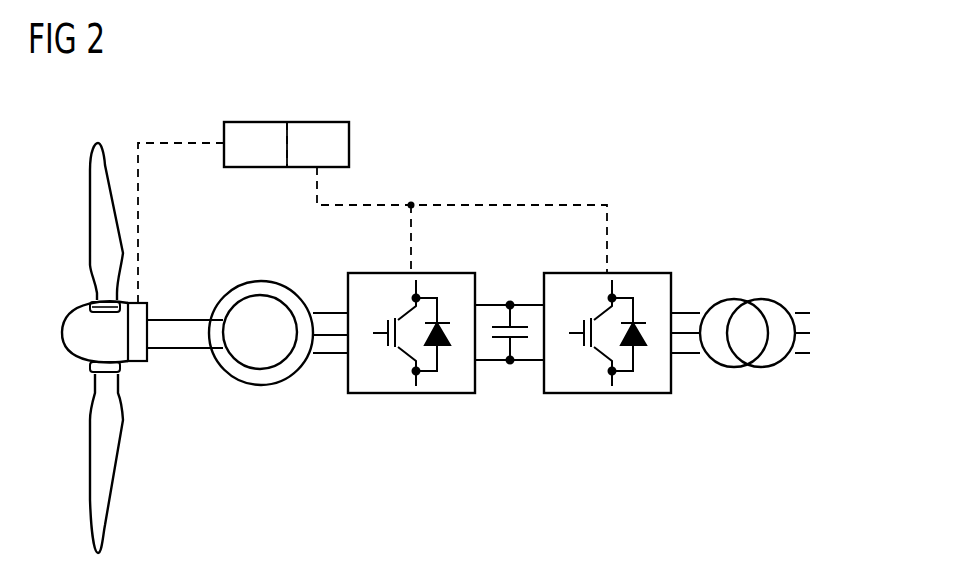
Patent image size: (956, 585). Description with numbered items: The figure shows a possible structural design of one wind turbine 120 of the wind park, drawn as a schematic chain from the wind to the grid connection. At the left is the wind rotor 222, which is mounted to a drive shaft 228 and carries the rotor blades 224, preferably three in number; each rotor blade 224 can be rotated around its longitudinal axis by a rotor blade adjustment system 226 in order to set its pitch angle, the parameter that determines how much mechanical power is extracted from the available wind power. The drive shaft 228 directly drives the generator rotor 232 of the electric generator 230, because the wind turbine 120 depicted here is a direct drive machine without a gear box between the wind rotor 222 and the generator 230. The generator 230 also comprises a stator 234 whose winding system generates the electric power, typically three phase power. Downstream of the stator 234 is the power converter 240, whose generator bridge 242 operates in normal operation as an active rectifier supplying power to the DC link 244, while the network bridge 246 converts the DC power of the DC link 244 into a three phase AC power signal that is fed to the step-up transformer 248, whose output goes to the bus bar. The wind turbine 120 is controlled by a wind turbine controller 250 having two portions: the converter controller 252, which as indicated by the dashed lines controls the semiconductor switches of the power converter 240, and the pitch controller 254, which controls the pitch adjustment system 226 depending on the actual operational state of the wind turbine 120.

The wind turbine 120 is at (713, 212).
The wind rotor 222 is at (80, 240).
The rotor blades 224 is at (92, 163).
The rotor blade adjustment system 226 is at (145, 356).
The drive shaft 228 is at (178, 324).
The electric generator 230 is at (262, 400).
The generator rotor 232 is at (278, 306).
The stator 234 is at (259, 276).
The power converter 240 is at (385, 407).
The generator bridge 242 is at (381, 271).
The DC link 244 is at (493, 304).
The network bridge 246 is at (635, 271).
The step-up transformer 248 is at (758, 298).
The wind turbine controller 250 is at (392, 132).
The converter controller 252 is at (318, 126).
The pitch controller 254 is at (253, 126).